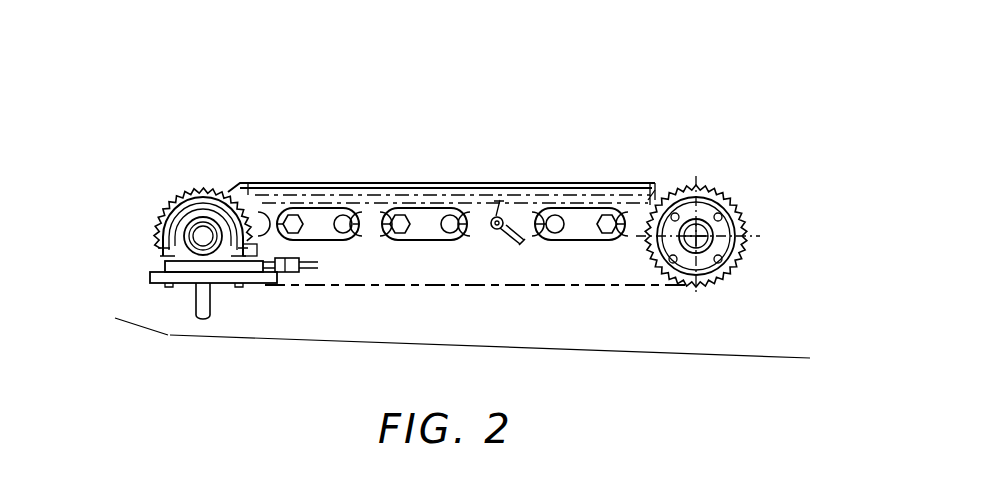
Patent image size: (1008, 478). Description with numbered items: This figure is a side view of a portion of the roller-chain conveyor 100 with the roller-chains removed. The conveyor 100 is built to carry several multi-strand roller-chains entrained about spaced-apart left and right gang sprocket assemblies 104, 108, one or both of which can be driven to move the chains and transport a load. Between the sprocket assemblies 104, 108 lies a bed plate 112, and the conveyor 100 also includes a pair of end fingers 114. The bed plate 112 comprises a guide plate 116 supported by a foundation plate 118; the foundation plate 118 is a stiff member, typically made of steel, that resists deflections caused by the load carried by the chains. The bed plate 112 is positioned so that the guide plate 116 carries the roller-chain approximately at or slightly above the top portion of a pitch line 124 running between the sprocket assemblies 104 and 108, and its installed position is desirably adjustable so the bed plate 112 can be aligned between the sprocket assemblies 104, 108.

The roller-chain conveyor 100 is at (674, 120).
The left gang sprocket assembly 104 is at (128, 255).
The right gang sprocket assembly 108 is at (762, 248).
The bed plate 112 is at (341, 152).
The end fingers 114 is at (250, 190).
The guide plate 116 is at (408, 185).
The foundation plate 118 is at (478, 185).
The pitch line 124 is at (597, 286).